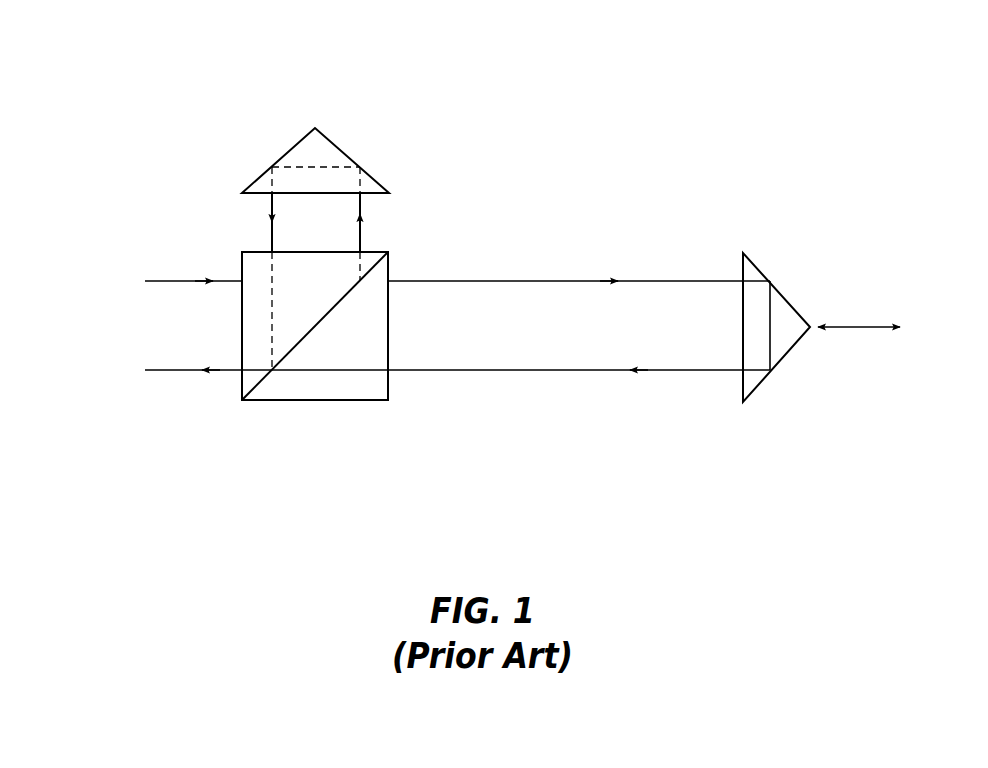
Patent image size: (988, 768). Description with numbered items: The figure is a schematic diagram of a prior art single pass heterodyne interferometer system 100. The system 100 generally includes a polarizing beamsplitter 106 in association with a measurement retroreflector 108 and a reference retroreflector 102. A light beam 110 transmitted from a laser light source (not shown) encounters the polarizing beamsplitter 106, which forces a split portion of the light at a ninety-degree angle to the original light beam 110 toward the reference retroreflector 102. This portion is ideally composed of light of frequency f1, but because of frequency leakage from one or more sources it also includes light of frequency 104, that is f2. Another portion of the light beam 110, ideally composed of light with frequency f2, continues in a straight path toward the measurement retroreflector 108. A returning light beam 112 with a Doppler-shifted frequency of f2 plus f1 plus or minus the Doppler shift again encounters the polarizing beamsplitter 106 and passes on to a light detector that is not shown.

The heterodyne interferometer system 100 is at (73, 67).
The reference retroreflector 102 is at (348, 145).
The light of frequency f2 (leakage) 104 is at (547, 252).
The polarizing beamsplitter 106 is at (363, 402).
The measurement retroreflector 108 is at (783, 365).
The light beam 110 is at (183, 282).
The returning light beam 112 is at (177, 372).